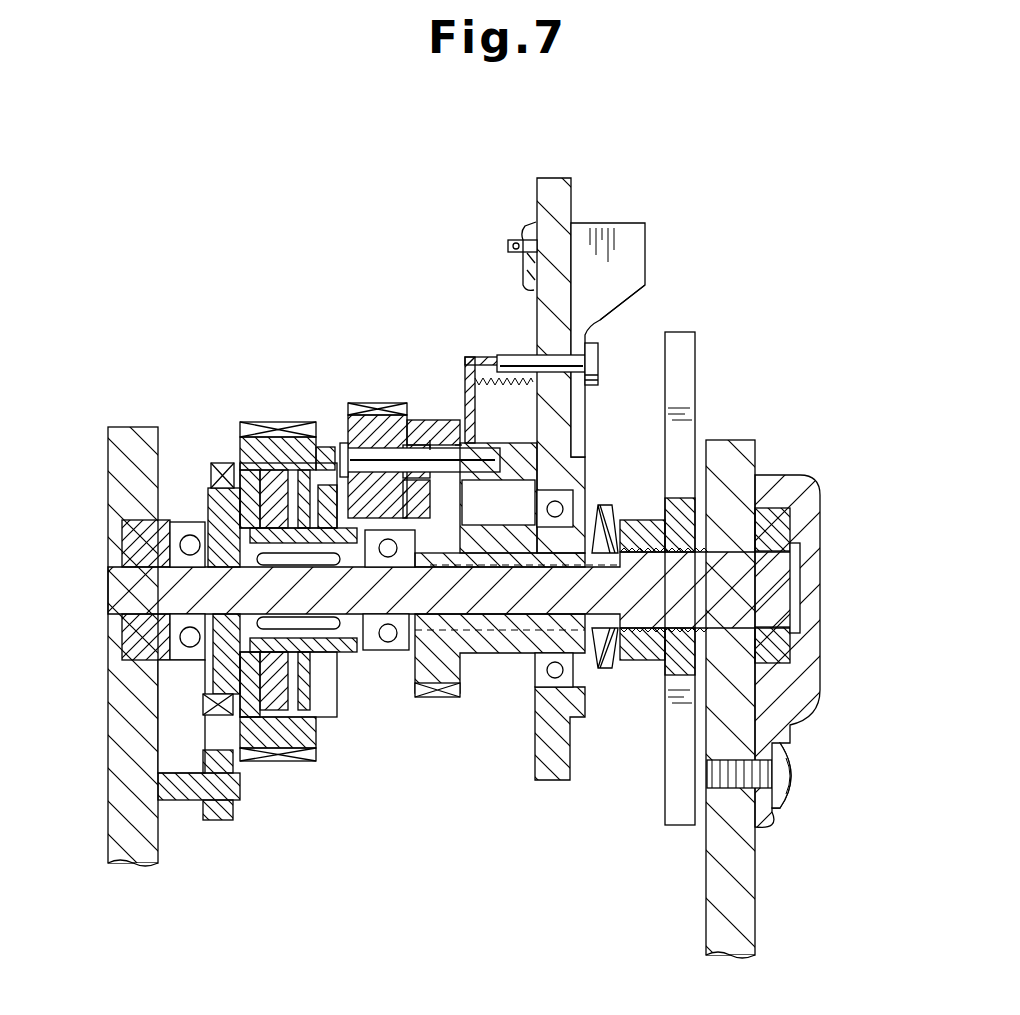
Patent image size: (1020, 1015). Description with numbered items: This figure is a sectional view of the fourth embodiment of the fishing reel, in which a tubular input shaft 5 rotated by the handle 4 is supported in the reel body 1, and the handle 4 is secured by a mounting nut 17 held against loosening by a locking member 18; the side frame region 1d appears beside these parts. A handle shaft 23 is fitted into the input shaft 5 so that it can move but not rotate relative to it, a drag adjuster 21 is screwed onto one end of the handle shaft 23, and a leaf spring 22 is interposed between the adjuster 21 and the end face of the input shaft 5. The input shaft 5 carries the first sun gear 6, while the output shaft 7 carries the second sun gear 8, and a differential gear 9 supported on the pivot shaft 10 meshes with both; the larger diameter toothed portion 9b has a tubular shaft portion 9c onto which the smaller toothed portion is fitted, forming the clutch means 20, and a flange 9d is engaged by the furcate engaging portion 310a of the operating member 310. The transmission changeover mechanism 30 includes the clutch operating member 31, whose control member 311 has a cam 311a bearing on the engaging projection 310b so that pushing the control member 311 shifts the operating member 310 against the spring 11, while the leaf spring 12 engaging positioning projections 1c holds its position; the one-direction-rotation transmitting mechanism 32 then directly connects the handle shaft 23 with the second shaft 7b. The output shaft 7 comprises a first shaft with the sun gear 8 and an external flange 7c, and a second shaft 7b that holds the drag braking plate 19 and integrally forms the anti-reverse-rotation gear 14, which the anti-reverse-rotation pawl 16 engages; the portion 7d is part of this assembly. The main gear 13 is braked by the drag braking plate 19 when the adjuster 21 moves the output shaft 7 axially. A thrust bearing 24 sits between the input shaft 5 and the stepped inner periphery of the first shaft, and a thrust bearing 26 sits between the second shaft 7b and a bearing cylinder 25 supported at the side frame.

The reel body 1 is at (555, 178).
The positioning projections 1c is at (528, 222).
The side plate 1d is at (132, 433).
The handle 4 is at (750, 902).
The input shaft 5 is at (503, 645).
The first sun gear 6 is at (440, 690).
The output shaft 7 is at (303, 681).
The second shaft 7b is at (296, 700).
The external flange 7c is at (316, 700).
The clutch winding 7d is at (333, 700).
The second sun gear 8 is at (386, 690).
The differential gear 9 is at (360, 410).
The larger diameter toothed portion 9b is at (345, 445).
The tubular shaft portion 9c is at (440, 440).
The flange 9d is at (412, 442).
The pivot shaft 10 is at (508, 456).
The spring 11 is at (525, 383).
The leaf spring 12 is at (512, 226).
The main gear 13 is at (262, 428).
The anti-reverse-rotation gear 14 is at (165, 455).
The anti-reverse-rotation pawl 16 is at (215, 738).
The mounting nut 17 is at (790, 525).
The locking member 18 is at (810, 683).
The drag braking plate 19 is at (255, 440).
The clutch means 20 is at (440, 440).
The drag adjuster 21 is at (697, 410).
The leaf spring 22 is at (606, 670).
The handle shaft 23 is at (648, 600).
The thrust bearing 24 is at (405, 640).
The bearing cylinder 25 is at (160, 560).
The thrust bearing 26 is at (178, 532).
The transmission changeover mechanism 30 is at (676, 325).
The clutch operating member 31 is at (676, 325).
The one-direction-rotation transmitting mechanism 32 is at (270, 630).
The operating member 310 is at (508, 357).
The furcate engaging portion 310a is at (455, 435).
The engaging projection 310b is at (600, 370).
The control member 311 is at (645, 240).
The cam 311a is at (622, 300).